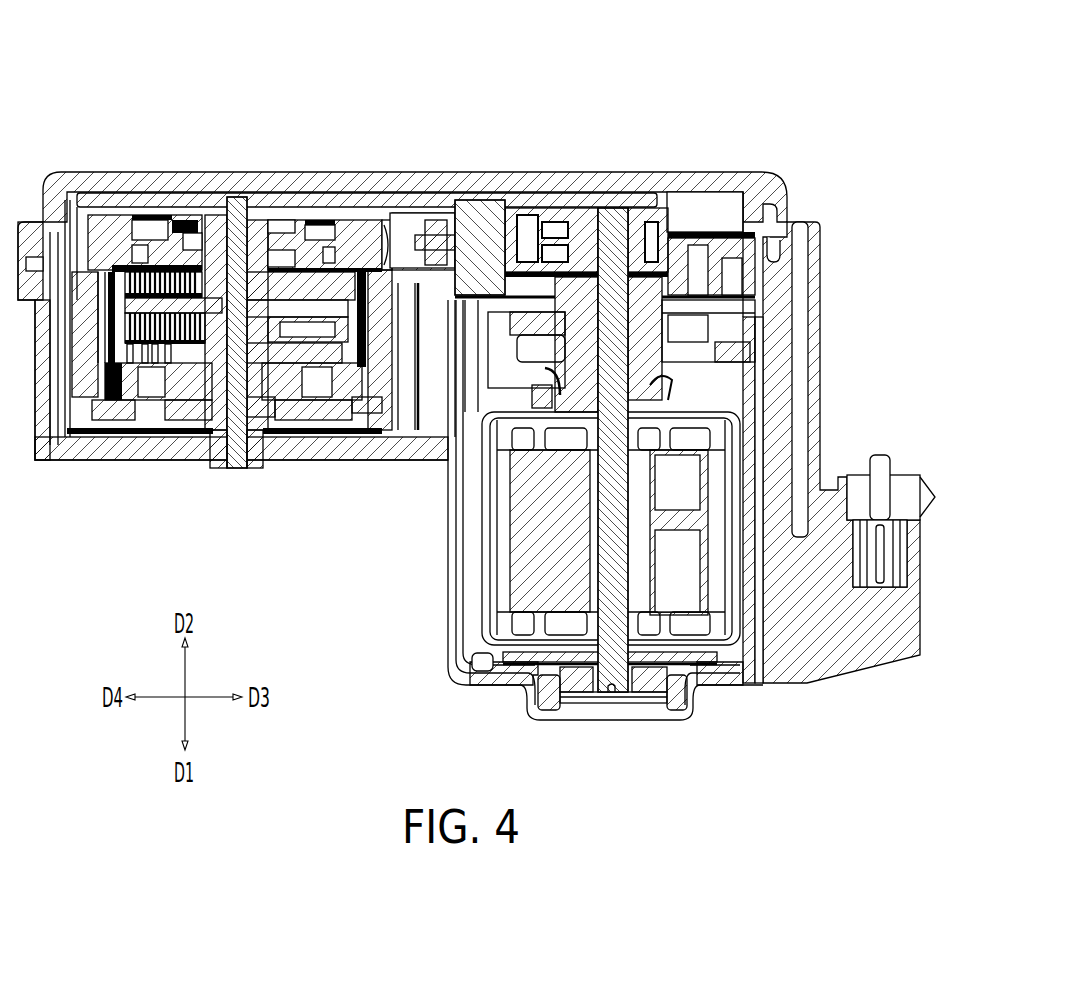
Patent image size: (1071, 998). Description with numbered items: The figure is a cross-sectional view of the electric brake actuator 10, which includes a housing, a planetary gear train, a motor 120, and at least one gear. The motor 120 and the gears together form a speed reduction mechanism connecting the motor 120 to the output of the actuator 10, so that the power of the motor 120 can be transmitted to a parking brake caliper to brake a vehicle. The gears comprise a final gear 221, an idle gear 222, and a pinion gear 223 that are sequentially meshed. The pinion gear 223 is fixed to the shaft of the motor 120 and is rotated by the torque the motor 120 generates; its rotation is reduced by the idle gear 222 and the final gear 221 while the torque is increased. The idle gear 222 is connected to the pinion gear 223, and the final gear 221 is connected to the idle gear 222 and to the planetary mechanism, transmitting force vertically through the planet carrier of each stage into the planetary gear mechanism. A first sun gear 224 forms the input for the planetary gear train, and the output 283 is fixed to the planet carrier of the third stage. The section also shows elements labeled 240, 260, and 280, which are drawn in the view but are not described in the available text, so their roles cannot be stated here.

The electric brake actuator 10 is at (476, 366).
The motor 120 is at (473, 585).
The final gear 221 is at (113, 225).
The idle gear 222 is at (427, 218).
The pinion gear 223 is at (628, 220).
The first sun gear 224 is at (257, 220).
The lamination stack 240 is at (133, 303).
The output gear 260 is at (173, 355).
The bearing member 280 is at (200, 413).
The output 283 is at (253, 463).